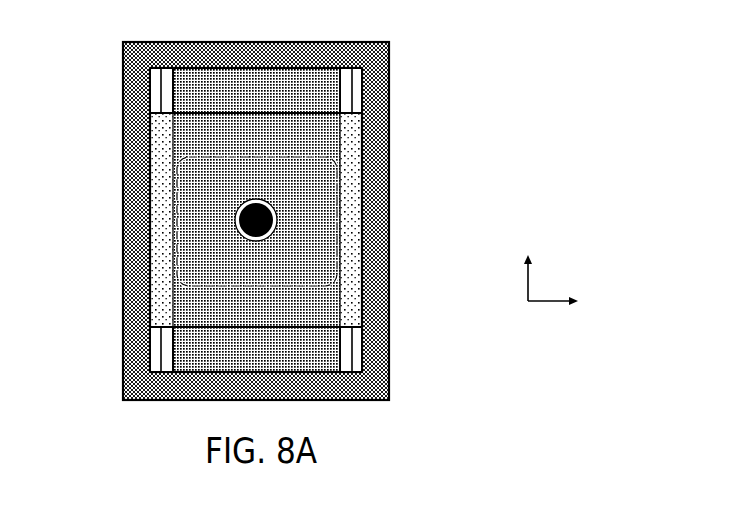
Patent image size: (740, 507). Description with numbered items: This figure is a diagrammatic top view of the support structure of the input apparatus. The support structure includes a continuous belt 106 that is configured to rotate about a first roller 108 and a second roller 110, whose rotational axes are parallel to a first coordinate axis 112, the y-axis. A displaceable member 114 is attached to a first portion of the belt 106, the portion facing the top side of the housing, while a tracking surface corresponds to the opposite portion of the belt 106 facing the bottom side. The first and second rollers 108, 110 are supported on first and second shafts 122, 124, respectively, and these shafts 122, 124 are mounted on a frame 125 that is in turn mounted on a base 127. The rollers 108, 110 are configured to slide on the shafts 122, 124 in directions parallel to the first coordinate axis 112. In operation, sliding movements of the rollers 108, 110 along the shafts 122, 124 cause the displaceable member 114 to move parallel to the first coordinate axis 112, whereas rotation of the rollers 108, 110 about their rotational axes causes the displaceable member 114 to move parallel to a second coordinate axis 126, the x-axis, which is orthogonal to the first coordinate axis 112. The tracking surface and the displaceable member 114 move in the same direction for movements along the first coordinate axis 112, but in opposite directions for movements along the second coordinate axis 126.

The continuous belt 106 is at (270, 113).
The first roller 108 is at (158, 74).
The second roller 110 is at (360, 78).
The first coordinate axis 112 is at (528, 285).
The displaceable member 114 is at (256, 200).
The first shaft 122 is at (160, 355).
The second shaft 124 is at (353, 353).
The frame 125 is at (228, 53).
The second coordinate axis 126 is at (545, 303).
The base 127 is at (383, 187).